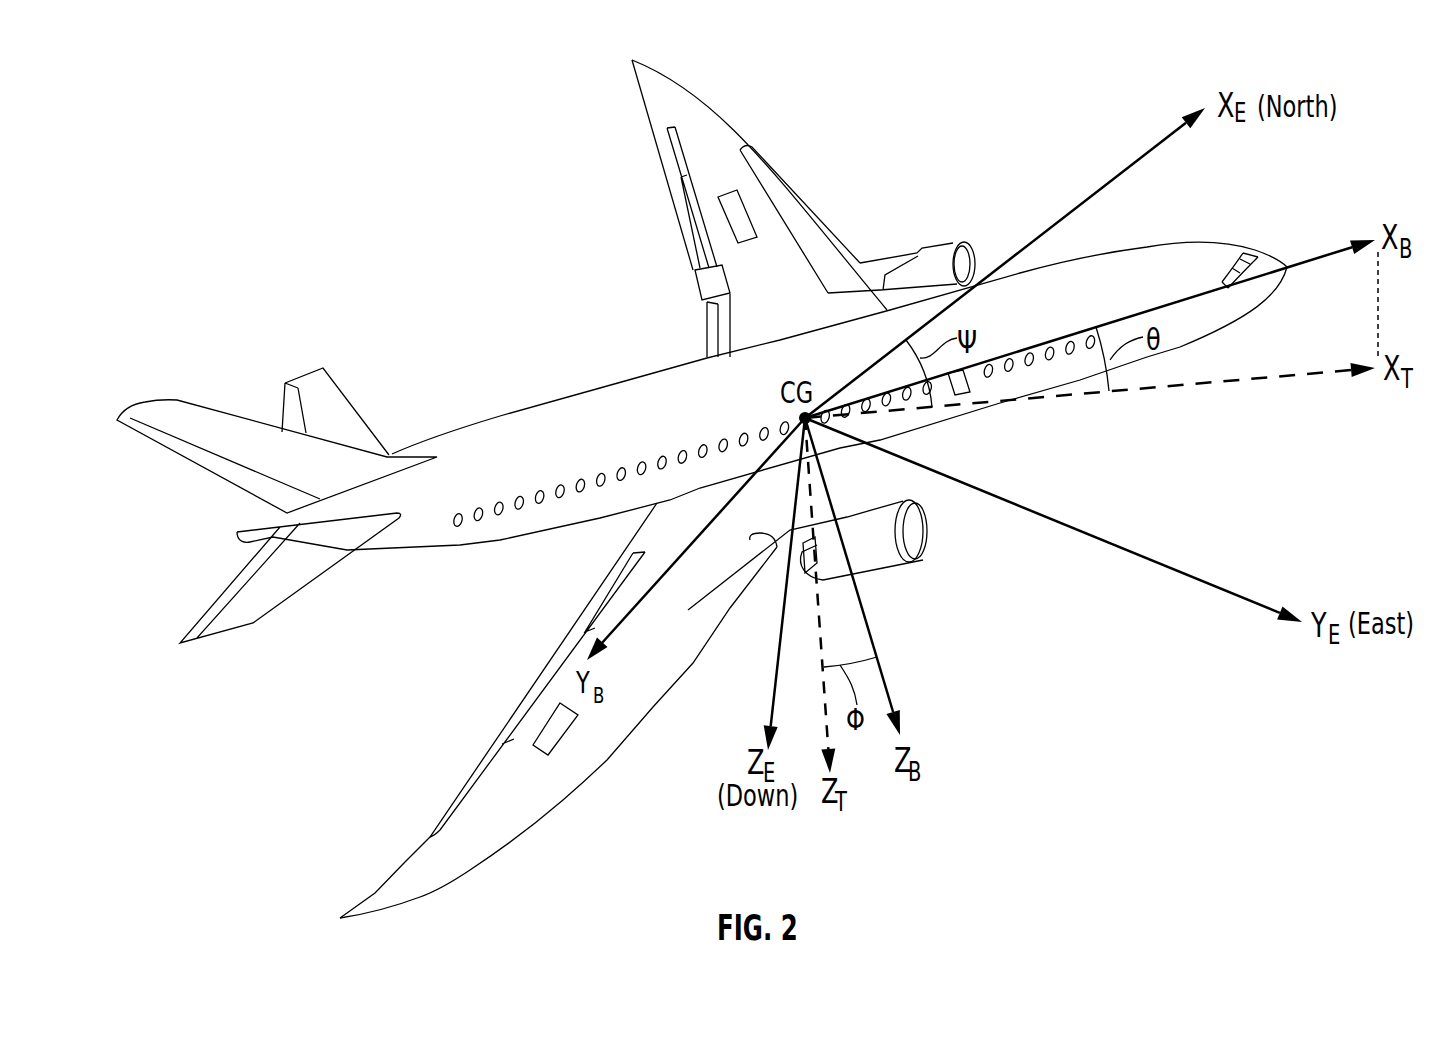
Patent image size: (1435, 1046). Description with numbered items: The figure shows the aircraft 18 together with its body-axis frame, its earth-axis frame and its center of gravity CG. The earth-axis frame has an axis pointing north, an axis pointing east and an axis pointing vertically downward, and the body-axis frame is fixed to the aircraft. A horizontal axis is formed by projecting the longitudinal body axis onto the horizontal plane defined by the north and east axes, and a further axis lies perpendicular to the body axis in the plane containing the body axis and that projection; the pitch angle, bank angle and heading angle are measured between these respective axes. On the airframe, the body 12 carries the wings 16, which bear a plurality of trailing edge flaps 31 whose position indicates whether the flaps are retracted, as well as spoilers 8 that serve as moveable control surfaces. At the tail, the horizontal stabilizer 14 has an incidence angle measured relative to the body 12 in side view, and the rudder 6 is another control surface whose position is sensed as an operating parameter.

The rudder 6 is at (197, 452).
The spoilers 8 is at (739, 208).
The body 12 is at (413, 523).
The horizontal stabilizer 14 is at (333, 396).
The wings 16 is at (772, 288).
The aircraft 18 is at (702, 489).
The trailing edge flaps 31 is at (697, 240).